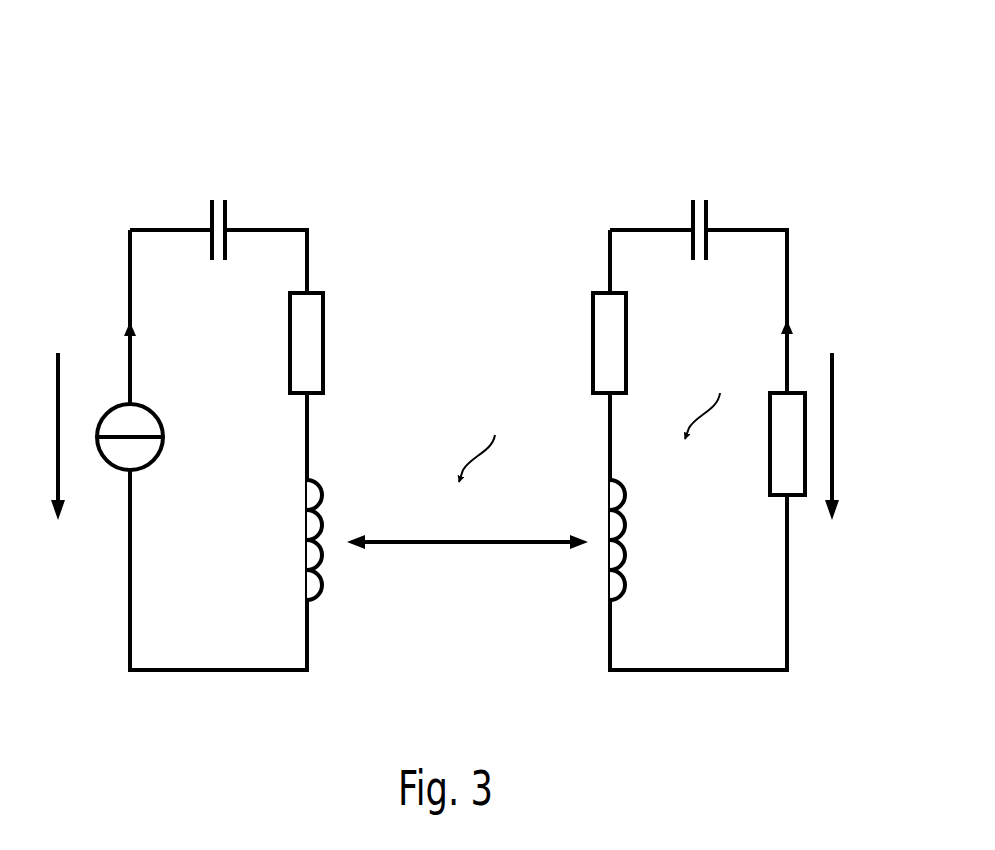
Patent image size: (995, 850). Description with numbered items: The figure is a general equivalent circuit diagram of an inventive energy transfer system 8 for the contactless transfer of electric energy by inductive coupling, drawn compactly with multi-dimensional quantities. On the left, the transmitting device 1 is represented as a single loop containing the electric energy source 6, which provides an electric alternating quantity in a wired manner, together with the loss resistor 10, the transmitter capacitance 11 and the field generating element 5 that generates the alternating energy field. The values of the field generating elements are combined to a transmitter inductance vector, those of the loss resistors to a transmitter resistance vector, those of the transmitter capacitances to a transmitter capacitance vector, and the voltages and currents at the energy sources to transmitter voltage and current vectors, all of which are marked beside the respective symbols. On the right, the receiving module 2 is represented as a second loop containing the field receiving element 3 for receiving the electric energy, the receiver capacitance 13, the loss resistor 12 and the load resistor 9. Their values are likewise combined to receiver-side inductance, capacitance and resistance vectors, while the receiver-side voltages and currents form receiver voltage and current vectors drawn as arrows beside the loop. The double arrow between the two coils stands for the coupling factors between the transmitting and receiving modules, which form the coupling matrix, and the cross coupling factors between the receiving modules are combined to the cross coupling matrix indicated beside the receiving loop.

The transmitting device 1 is at (321, 161).
The receiving module 2 is at (819, 161).
The field receiving element 3 is at (626, 586).
The field generating element 5 is at (305, 575).
The electric energy source 6 is at (155, 451).
The inductive coupling arrangement 8 is at (604, 89).
The load resistor 9 is at (783, 497).
The loss resistor 10 is at (291, 372).
The transmitter capacitance 11 is at (211, 217).
The loss resistor 12 is at (594, 346).
The receiver capacitance 13 is at (706, 217).